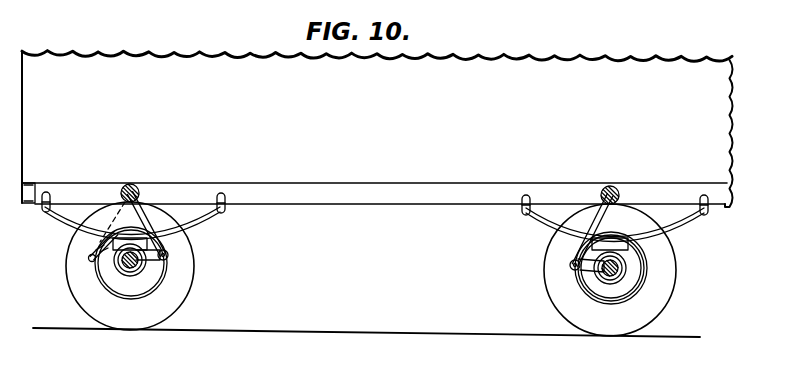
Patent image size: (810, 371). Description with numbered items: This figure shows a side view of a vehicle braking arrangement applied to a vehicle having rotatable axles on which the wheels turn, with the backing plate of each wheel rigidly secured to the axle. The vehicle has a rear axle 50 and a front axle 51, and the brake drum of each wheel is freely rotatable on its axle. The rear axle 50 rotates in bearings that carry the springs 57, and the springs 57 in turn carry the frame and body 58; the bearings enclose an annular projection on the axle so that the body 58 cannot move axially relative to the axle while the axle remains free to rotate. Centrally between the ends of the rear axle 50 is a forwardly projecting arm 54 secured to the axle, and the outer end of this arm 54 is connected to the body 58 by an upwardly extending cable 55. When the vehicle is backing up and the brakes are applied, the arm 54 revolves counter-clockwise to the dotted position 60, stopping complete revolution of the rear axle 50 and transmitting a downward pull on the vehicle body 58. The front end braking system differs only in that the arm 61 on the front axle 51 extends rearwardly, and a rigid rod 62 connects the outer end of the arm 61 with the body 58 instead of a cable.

The rear axle 50 is at (130, 270).
The front axle 51 is at (632, 258).
The forwardly projecting arm 54 is at (152, 260).
The cable 55 is at (143, 207).
The springs 57 is at (191, 220).
The body 58 is at (350, 176).
The dotted position 60 is at (107, 270).
The arm 61 is at (590, 275).
The rigid rod 62 is at (585, 208).